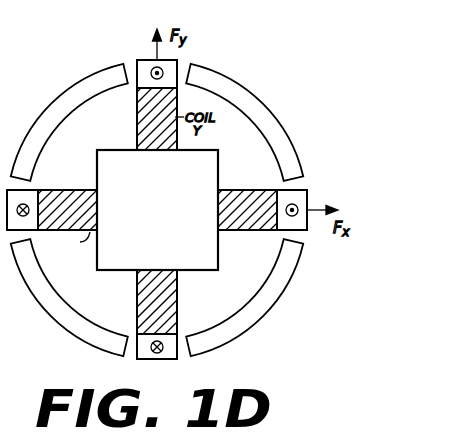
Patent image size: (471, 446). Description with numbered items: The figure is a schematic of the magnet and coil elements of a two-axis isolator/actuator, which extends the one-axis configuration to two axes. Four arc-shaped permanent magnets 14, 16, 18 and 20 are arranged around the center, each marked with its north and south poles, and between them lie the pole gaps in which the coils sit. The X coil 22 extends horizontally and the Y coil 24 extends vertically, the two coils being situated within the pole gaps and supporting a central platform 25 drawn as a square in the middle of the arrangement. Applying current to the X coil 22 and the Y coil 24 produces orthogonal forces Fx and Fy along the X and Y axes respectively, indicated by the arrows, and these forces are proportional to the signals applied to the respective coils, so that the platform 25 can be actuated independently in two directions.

The permanent magnet 14 is at (58, 100).
The permanent magnet 16 is at (247, 93).
The permanent magnet 18 is at (52, 323).
The permanent magnet 20 is at (268, 313).
The X coil 22 is at (52, 190).
The Y coil 24 is at (176, 295).
The platform 25 is at (168, 217).